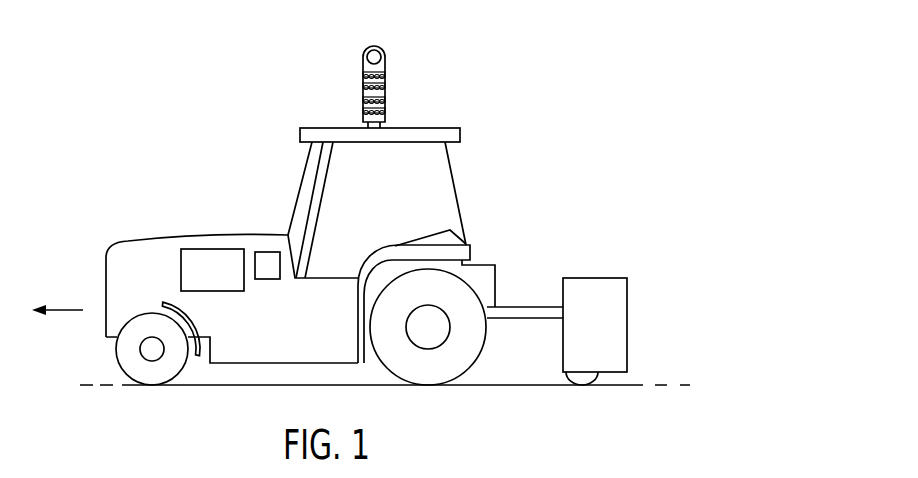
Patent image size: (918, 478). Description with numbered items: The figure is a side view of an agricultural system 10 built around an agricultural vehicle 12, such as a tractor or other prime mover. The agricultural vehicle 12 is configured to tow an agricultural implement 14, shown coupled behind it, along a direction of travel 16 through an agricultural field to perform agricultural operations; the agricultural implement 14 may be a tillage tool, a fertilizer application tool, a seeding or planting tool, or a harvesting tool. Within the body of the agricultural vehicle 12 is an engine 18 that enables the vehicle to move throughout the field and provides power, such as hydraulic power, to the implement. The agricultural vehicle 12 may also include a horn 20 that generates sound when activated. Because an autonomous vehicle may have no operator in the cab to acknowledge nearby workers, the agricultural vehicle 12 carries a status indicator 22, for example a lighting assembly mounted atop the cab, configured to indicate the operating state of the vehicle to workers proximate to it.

The agricultural system 10 is at (472, 92).
The agricultural vehicle 12 is at (220, 233).
The agricultural implement 14 is at (600, 278).
The direction of travel 16 is at (70, 310).
The engine 18 is at (181, 283).
The horn 20 is at (268, 252).
The status indicator 22 is at (363, 66).